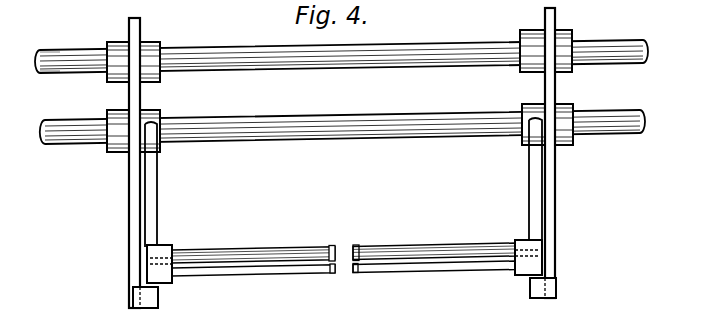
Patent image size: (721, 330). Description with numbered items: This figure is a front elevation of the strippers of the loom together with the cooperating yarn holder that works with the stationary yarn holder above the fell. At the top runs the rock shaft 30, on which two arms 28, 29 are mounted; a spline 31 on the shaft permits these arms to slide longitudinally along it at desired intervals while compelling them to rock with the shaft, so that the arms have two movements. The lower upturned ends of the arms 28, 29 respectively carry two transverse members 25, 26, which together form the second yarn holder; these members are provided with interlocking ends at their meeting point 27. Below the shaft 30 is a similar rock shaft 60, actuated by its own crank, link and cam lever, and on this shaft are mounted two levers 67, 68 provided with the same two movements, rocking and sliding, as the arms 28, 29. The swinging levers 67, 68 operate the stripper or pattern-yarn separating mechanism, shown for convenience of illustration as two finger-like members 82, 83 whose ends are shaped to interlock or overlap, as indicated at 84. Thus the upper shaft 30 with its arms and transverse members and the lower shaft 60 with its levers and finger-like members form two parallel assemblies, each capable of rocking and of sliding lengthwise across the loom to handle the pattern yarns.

The transverse member 25 is at (250, 277).
The transverse member 26 is at (450, 268).
The meeting point 27 is at (333, 273).
The arm 28 is at (133, 208).
The arm 29 is at (550, 208).
The rock shaft 30 is at (339, 58).
The spline 31 is at (61, 58).
The rock shaft 60 is at (340, 128).
The lever 67 is at (152, 181).
The lever 68 is at (537, 186).
The finger-like member 82 is at (289, 258).
The finger-like member 83 is at (432, 250).
The interlocking ends 84 is at (333, 247).